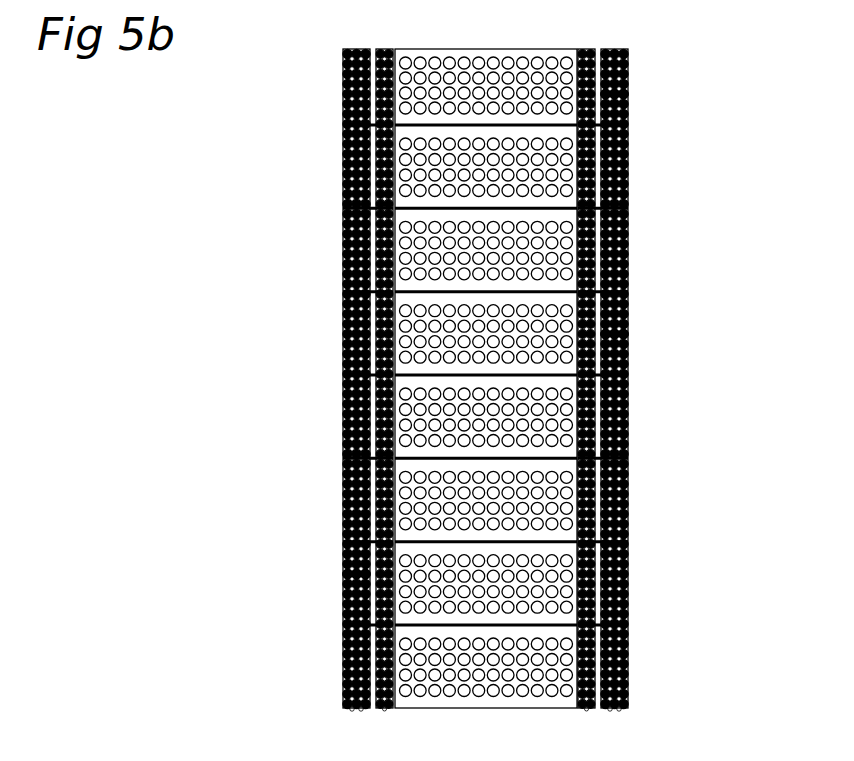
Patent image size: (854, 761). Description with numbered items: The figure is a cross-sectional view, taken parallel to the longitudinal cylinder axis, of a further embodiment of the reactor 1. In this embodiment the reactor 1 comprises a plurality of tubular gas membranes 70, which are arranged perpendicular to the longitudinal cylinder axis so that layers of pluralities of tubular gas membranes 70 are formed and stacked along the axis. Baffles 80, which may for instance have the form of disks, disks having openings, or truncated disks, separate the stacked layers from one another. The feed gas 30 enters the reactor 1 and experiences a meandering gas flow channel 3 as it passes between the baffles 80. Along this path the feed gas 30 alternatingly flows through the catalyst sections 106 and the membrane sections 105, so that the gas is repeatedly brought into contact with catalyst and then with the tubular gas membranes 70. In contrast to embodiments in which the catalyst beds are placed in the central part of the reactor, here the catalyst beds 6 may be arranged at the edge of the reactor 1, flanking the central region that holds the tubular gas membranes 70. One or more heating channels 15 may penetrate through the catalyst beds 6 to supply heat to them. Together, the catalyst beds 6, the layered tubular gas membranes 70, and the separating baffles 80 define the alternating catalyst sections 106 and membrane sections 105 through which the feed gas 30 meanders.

The reactor 1 is at (333, 679).
The meandering gas flow channel 3 is at (606, 532).
The catalyst beds 6 is at (350, 572).
The heating channels 15 is at (373, 112).
The feed gas 30 is at (634, 65).
The tubular gas membranes 70 is at (471, 58).
The baffles 80 is at (531, 124).
The membrane sections 105 is at (366, 380).
The catalyst sections 106 is at (626, 89).